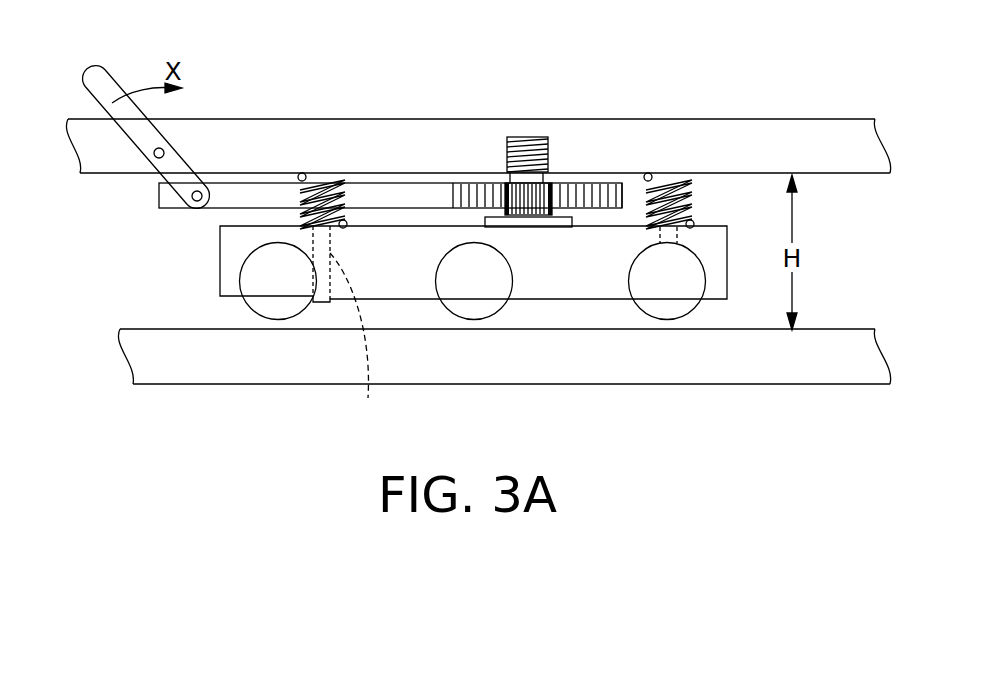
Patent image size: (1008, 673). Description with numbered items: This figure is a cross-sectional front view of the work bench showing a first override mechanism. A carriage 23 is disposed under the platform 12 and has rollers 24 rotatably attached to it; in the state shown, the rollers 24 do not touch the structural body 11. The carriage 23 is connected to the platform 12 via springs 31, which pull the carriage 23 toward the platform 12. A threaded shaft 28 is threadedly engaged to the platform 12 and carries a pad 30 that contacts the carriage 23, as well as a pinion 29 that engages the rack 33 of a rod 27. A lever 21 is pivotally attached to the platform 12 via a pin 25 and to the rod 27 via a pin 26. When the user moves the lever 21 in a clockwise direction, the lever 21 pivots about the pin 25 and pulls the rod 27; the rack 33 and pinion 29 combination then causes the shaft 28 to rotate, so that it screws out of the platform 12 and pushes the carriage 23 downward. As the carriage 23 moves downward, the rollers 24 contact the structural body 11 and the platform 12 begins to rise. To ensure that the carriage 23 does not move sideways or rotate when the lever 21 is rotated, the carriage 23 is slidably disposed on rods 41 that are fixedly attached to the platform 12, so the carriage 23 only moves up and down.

The structural body 11 is at (638, 360).
The platform 12 is at (622, 137).
The lever 21 is at (98, 80).
The carriage 23 is at (235, 243).
The rollers 24 is at (271, 293).
The pin 25 is at (164, 152).
The pin 26 is at (192, 196).
The rod 27 is at (402, 200).
The threaded shaft 28 is at (533, 137).
The pinion 29 is at (545, 198).
The pad 30 is at (548, 218).
The springs 31 is at (358, 195).
The rack 33 is at (595, 197).
The rods 41 is at (359, 342).